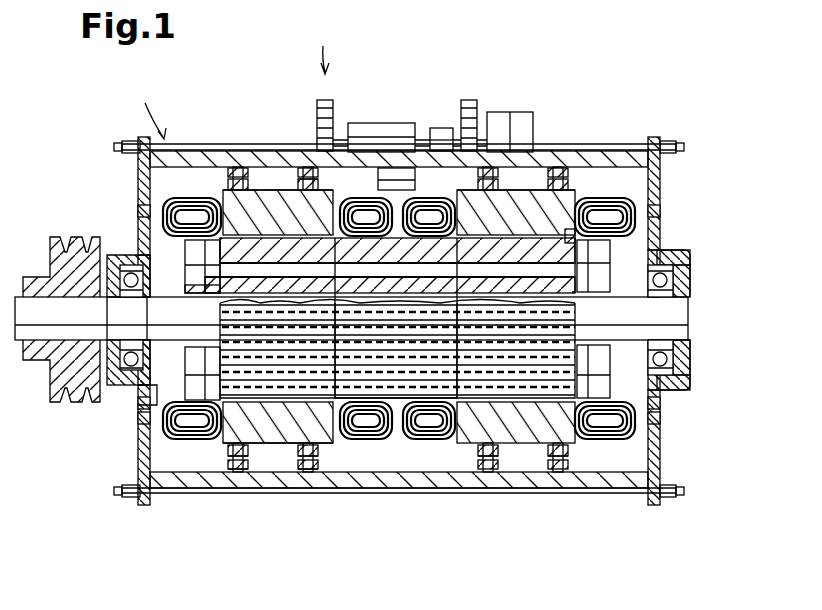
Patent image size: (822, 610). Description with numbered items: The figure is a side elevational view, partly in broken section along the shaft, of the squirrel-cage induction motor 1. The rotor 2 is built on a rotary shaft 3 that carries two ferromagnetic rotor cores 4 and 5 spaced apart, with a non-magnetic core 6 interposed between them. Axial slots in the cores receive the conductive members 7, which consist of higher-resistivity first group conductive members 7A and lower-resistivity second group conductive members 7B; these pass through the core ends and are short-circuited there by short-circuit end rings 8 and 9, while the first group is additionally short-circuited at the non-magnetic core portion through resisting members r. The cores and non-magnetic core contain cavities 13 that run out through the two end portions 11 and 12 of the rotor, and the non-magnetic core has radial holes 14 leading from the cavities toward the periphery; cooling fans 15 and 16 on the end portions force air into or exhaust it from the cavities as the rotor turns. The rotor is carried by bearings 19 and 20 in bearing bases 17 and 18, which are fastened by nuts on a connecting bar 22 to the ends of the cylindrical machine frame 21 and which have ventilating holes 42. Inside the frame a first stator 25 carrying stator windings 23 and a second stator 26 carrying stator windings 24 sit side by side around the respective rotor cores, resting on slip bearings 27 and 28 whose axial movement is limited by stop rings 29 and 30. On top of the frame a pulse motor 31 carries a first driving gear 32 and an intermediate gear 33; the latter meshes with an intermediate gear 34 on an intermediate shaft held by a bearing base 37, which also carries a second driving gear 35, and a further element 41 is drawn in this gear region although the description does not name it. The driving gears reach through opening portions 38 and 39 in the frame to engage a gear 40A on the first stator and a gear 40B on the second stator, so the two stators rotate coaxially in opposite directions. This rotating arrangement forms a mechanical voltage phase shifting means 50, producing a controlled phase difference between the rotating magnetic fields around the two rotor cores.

The induction motor 1 is at (142, 102).
The rotor 2 is at (245, 586).
The rotary shaft 3 is at (43, 310).
The rotor core 4 is at (573, 222).
The rotor core 5 is at (215, 190).
The non-magnetic core 6 is at (392, 168).
The conductive members 7 is at (222, 400).
The first group conductive members 7A is at (290, 400).
The second group conductive members 7B is at (368, 440).
The short-circuit end ring 8 is at (612, 247).
The short-circuit end ring 9 is at (218, 253).
The end portion of the rotor 11 is at (590, 277).
The end portion of the rotor 12 is at (185, 277).
The cavities 13 is at (280, 190).
The holes 14 is at (600, 313).
The cooling fan 15 is at (612, 380).
The cooling fan 16 is at (142, 360).
The bearing base 17 is at (660, 190).
The bearing base 18 is at (143, 165).
The bearing 19 is at (690, 277).
The bearing 20 is at (112, 257).
The machine frame 21 is at (207, 158).
The connecting bar 22 is at (640, 145).
The stator windings 23 is at (598, 494).
The stator windings 24 is at (125, 478).
The first stator 25 is at (570, 200).
The second stator 26 is at (232, 166).
The slip bearing 27 is at (495, 450).
The slip bearing 28 is at (238, 458).
The stop ring 29 is at (486, 462).
The stop ring 30 is at (235, 472).
The pulse motor 31 is at (525, 112).
The first driving gear 32 is at (465, 103).
The intermediate gear 33 is at (440, 128).
The intermediate gear 34 is at (450, 135).
The second driving gear 35 is at (323, 100).
The bearing base 37 is at (378, 123).
The opening portion 38 is at (480, 105).
The opening portion 39 is at (303, 168).
The gear 40A is at (470, 200).
The gear 40B is at (398, 442).
The terminal 41 is at (400, 123).
The ventilating holes 42 is at (138, 405).
The voltage phase shifting means 50 is at (336, 38).
The resisting members r is at (427, 445).